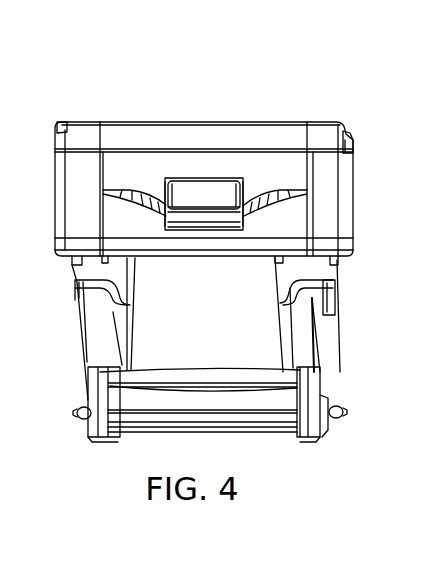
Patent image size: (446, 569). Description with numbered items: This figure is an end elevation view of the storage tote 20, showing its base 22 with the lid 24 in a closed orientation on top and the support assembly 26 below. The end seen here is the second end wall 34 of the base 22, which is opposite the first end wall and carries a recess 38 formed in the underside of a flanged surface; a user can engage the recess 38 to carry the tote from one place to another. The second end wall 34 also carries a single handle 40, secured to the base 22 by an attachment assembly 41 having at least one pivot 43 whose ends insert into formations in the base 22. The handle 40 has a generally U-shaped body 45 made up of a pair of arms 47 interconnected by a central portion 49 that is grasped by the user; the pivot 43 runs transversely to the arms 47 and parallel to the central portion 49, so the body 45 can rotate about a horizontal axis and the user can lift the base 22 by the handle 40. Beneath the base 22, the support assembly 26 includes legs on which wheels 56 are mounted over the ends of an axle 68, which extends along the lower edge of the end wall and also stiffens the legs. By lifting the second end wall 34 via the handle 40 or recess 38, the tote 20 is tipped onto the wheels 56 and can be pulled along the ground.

The storage tote 20 is at (337, 96).
The base 22 is at (360, 187).
The lid 24 is at (292, 123).
The second end wall 34 is at (232, 163).
The recess 38 is at (190, 250).
The handle 40 is at (208, 190).
The attachment assembly 41 is at (175, 160).
The pivot 43 is at (167, 189).
The body 45 is at (190, 205).
The arms 47 is at (153, 213).
The central portion 49 is at (227, 226).
The support assembly 26 is at (255, 448).
The wheels 56 is at (88, 440).
The axle 68 is at (77, 412).